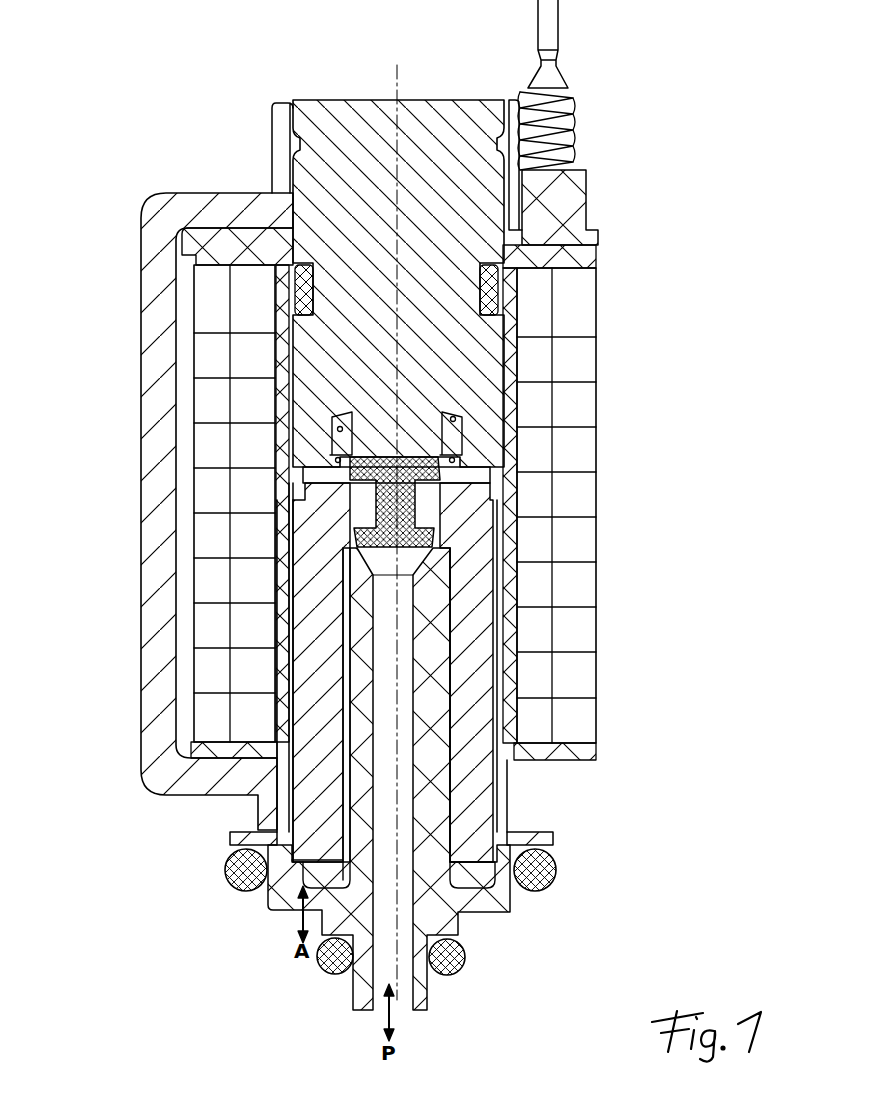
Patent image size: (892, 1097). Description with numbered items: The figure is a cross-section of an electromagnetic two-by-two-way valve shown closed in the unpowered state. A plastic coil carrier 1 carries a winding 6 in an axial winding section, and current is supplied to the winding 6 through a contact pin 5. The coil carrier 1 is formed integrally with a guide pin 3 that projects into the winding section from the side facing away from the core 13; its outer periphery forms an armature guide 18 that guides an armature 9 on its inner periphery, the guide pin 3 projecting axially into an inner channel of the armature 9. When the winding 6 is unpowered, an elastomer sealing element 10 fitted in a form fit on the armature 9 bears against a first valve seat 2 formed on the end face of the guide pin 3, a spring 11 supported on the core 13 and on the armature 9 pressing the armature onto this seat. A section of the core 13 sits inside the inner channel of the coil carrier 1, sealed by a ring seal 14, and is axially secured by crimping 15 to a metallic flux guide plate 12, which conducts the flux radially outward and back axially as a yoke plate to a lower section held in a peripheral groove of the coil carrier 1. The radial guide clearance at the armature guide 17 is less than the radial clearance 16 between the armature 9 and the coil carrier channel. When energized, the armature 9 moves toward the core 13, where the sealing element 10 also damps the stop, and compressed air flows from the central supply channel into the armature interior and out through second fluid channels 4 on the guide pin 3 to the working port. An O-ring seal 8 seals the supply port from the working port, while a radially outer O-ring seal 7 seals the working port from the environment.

The coil carrier 1 is at (535, 252).
The first valve seat 2 is at (413, 549).
The guide pin 3 is at (432, 607).
The second fluid channels 4 is at (343, 653).
The contact pin 5 is at (553, 5).
The winding 6 is at (550, 370).
The O-ring seal 7 is at (530, 870).
The O-ring seal 8 is at (448, 957).
The armature 9 is at (472, 527).
The sealing element 10 is at (405, 472).
The spring 11 is at (453, 445).
The flux guide plate 12 is at (160, 315).
The core 13 is at (355, 193).
The ring seal 14 is at (301, 285).
The crimping 15 is at (272, 138).
The radial clearance 16 is at (293, 528).
The armature guide 17 is at (292, 787).
The armature guide 18 is at (452, 588).